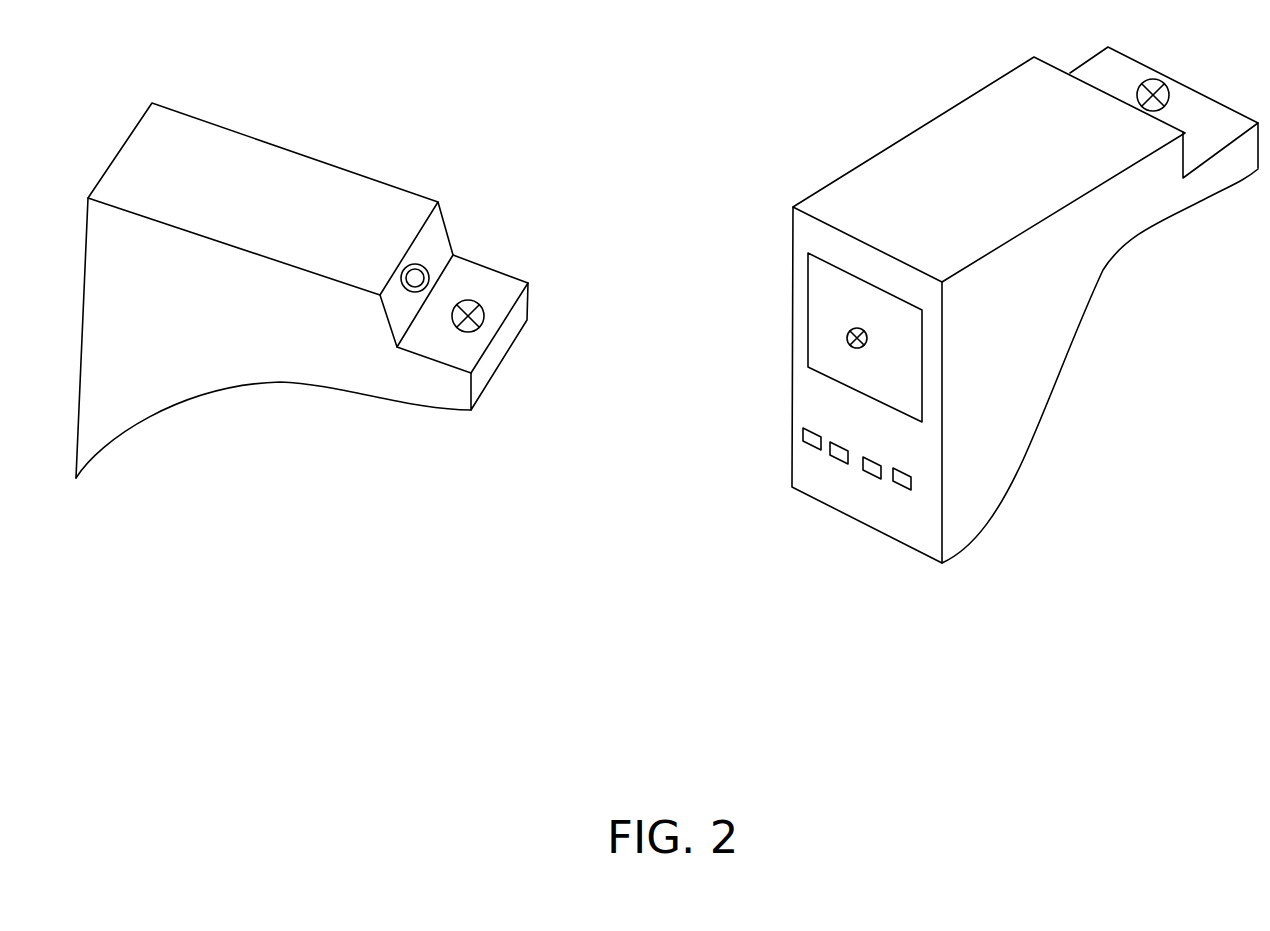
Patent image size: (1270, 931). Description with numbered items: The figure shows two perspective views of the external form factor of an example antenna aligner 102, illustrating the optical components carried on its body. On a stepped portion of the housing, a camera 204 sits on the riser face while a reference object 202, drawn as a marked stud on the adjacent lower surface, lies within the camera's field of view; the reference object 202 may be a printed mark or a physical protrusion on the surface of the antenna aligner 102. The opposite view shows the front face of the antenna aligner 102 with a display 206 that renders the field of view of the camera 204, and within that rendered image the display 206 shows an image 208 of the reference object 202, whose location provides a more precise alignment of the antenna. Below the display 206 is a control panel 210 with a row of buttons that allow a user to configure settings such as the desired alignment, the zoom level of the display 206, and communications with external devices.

The antenna aligner 102 is at (698, 753).
The reference object 202 is at (472, 312).
The camera 204 is at (415, 268).
The display 206 is at (863, 292).
The image of the reference object 208 is at (847, 342).
The control panel 210 is at (860, 485).